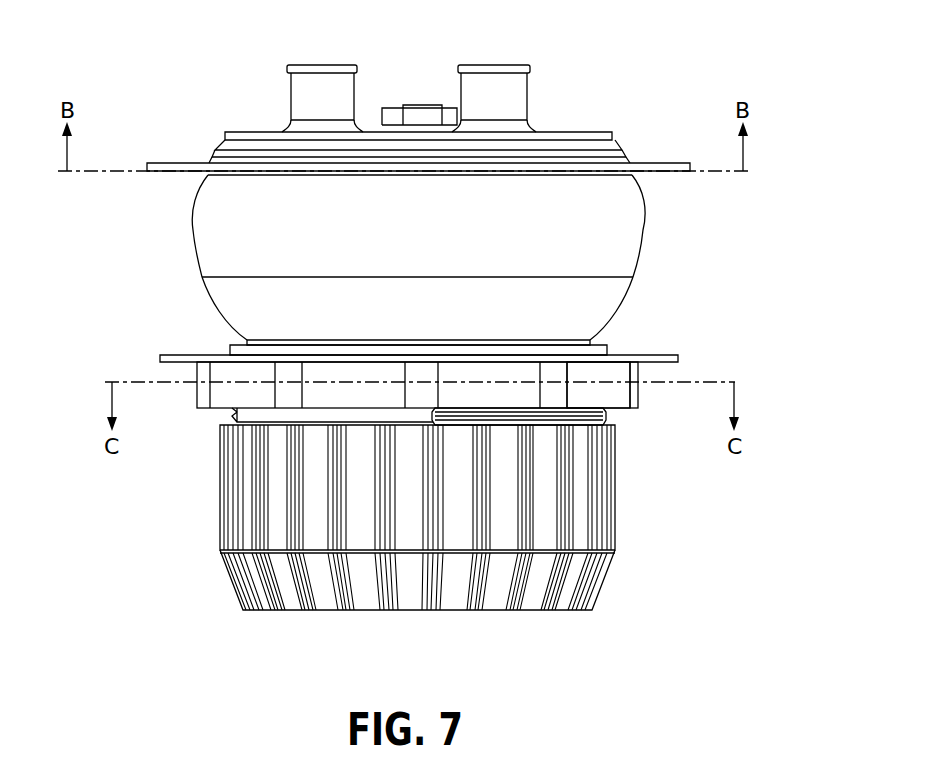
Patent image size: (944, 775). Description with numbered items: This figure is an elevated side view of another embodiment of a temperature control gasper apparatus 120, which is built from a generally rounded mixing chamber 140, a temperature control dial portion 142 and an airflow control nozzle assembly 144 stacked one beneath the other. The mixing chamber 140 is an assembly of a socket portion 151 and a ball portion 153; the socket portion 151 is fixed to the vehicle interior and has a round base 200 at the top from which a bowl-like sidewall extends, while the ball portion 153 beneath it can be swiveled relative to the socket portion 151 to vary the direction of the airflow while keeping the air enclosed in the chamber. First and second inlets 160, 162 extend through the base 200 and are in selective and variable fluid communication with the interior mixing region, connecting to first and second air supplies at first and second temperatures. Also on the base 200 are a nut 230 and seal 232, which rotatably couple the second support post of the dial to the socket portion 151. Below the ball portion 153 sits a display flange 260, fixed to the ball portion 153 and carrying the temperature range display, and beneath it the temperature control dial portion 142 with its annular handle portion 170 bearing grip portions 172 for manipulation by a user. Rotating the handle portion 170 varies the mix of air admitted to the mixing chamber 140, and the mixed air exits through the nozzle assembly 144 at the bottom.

The gasper apparatus 120 is at (603, 62).
The mixing chamber 140 is at (655, 245).
The temperature control dial portion 142 is at (648, 404).
The airflow control nozzle assembly 144 is at (605, 600).
The socket portion 151 is at (217, 240).
The ball portion 153 is at (233, 302).
The first inlet 160 is at (360, 126).
The second inlet 162 is at (516, 120).
The annular handle portion 170 is at (638, 372).
The grip portions 172 is at (600, 373).
The round base 200 is at (570, 138).
The nut 230 is at (447, 122).
The seal 232 is at (386, 124).
The display flange 260 is at (173, 358).